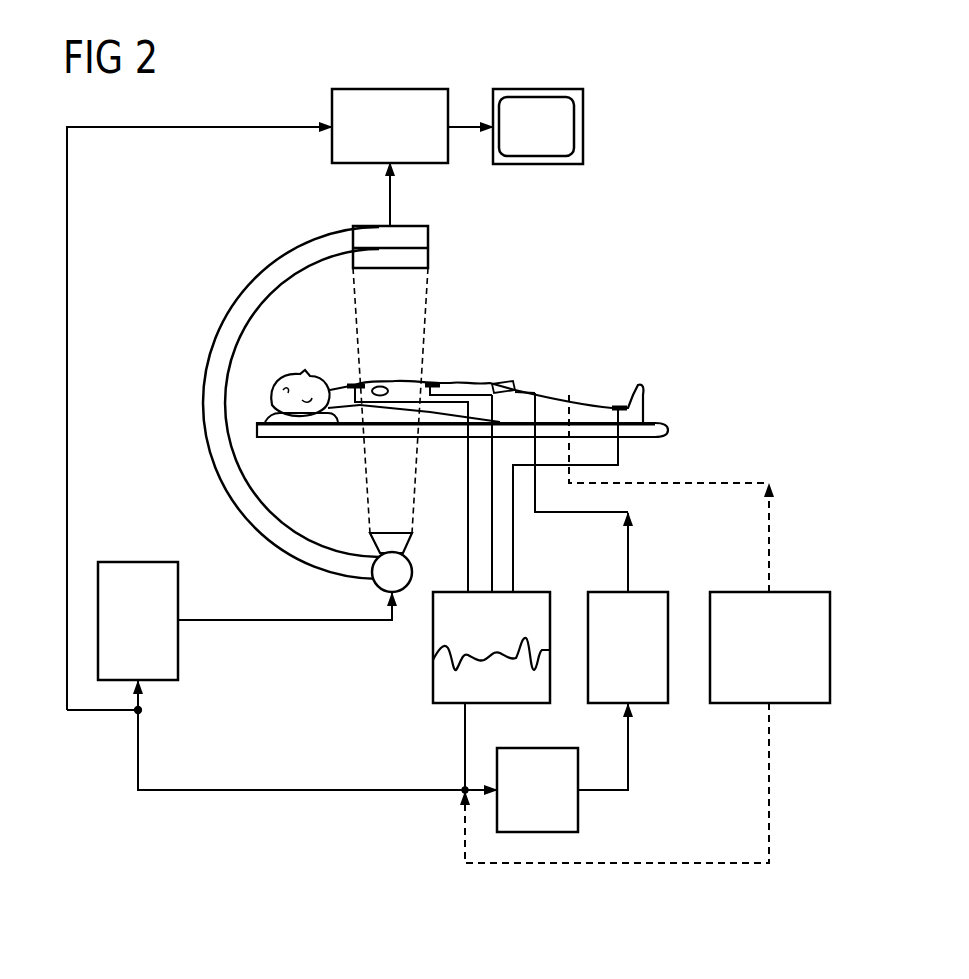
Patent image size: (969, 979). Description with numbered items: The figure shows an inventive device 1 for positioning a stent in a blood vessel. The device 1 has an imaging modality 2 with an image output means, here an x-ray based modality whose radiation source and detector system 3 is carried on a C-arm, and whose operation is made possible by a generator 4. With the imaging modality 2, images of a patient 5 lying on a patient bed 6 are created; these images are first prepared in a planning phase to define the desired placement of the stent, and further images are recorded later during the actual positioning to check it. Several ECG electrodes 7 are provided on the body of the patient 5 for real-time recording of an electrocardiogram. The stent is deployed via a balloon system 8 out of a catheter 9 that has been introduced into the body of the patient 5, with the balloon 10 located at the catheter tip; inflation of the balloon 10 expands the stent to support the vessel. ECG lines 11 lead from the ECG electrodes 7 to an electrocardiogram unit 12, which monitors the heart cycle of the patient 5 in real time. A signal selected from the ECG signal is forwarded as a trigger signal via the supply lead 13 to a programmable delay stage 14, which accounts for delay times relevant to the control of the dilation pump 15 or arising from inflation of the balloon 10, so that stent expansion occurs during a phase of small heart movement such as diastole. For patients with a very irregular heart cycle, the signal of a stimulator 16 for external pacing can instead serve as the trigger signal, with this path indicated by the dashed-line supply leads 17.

The device 1 is at (618, 258).
The imaging modality 2 is at (516, 74).
The radiation source and detector system 3 is at (235, 273).
The generator 4 is at (137, 560).
The patient 5 is at (284, 377).
The patient bed 6 is at (668, 425).
The ECG electrodes 7 is at (352, 382).
The balloon system 8 is at (396, 372).
The catheter 9 is at (450, 383).
The balloon 10 is at (380, 386).
The ECG lines 11 is at (468, 555).
The electrocardiogram unit 12 is at (433, 640).
The supply lead 13 is at (286, 790).
The delay stage 14 is at (578, 815).
The dilation pump 15 is at (650, 592).
The stimulator 16 is at (725, 592).
The supply leads 17 is at (770, 518).